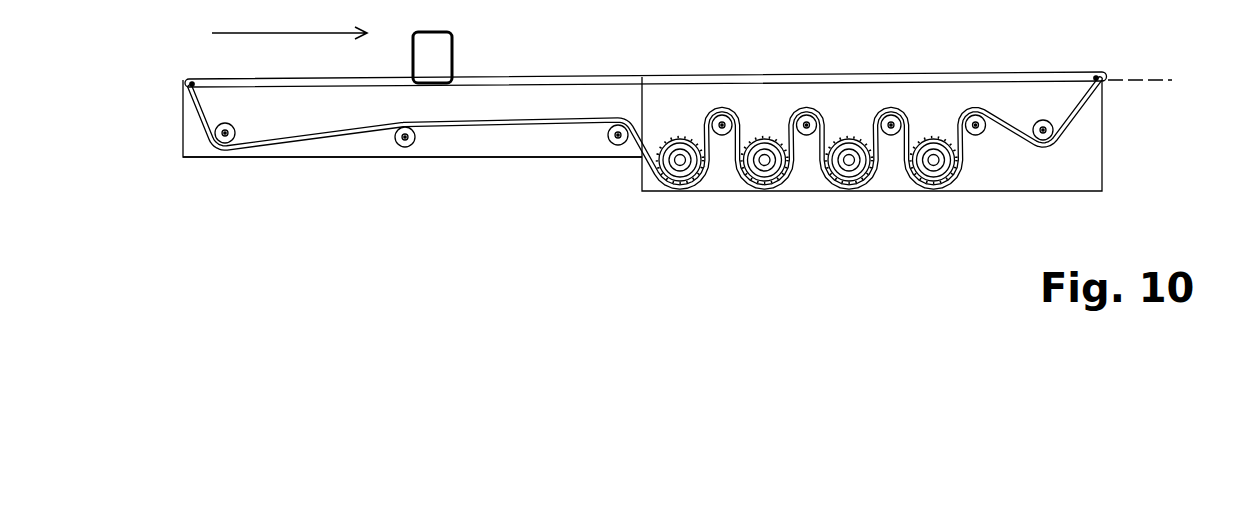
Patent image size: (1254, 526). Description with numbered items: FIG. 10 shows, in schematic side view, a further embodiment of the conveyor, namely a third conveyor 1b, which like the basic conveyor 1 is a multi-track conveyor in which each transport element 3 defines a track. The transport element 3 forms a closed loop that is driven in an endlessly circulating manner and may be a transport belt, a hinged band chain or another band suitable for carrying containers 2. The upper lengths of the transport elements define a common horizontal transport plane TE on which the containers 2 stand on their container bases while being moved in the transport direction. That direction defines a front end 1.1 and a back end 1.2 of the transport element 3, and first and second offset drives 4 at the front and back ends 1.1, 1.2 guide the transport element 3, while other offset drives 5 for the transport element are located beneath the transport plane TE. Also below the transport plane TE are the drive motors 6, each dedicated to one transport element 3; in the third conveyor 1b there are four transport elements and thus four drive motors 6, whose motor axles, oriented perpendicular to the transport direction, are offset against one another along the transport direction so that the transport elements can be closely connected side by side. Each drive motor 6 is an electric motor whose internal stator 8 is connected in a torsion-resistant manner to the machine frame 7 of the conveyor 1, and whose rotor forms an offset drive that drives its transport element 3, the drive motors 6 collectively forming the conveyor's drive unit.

The conveyor 1 is at (289, 19).
The front end 1.1 is at (173, 112).
The back end 1.2 is at (1103, 112).
The third conveyor 1b is at (1103, 55).
The container 2 is at (452, 58).
The transport element 3 is at (697, 82).
The offset drive 4 is at (192, 88).
The offset drive 5 is at (237, 145).
The drive motor 6 is at (922, 177).
The machine frame 7 is at (492, 143).
The internal stator 8 is at (849, 122).
The transport plane TE is at (1140, 101).